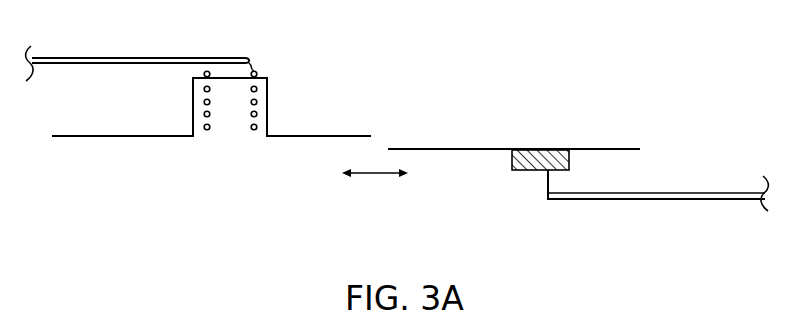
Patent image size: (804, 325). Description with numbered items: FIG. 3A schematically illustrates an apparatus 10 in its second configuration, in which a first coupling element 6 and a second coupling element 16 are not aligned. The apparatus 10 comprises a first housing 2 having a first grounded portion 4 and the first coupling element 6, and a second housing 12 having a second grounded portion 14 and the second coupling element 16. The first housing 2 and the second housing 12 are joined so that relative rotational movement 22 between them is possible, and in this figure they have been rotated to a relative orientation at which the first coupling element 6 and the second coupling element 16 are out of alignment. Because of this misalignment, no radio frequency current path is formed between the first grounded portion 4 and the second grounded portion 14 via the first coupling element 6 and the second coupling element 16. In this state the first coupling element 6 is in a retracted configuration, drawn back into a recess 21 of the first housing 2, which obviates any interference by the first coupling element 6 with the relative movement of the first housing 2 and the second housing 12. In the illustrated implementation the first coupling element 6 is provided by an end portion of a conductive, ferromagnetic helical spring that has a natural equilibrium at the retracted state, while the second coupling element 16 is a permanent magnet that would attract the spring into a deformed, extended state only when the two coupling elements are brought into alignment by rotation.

The first housing 2 is at (326, 136).
The first grounded portion 4 is at (143, 58).
The first coupling element 6 is at (258, 101).
The apparatus 10 is at (687, 79).
The second housing 12 is at (468, 197).
The second grounded portion 14 is at (666, 200).
The second coupling element 16 is at (571, 163).
The recess 21 is at (226, 126).
The relative rotational movement 22 is at (375, 178).